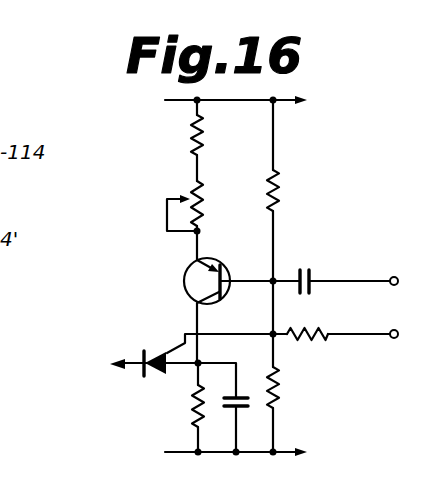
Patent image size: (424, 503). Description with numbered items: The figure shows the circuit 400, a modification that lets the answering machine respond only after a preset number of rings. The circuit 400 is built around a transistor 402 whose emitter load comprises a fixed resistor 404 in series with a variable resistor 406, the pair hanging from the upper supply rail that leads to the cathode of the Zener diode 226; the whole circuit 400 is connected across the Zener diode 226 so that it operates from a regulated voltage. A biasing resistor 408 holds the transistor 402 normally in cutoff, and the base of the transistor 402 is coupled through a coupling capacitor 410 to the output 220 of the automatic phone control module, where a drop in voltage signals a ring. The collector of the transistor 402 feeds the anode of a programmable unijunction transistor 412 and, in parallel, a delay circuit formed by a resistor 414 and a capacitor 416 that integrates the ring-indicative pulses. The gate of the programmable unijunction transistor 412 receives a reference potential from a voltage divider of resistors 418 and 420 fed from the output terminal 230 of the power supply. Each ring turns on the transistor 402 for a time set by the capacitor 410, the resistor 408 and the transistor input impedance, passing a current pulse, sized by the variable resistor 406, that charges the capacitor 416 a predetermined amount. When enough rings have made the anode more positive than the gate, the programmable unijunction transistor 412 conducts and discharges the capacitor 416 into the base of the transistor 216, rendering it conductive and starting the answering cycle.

The circuit 400 is at (141, 248).
The transistor 402 is at (223, 264).
The fixed resistor 404 is at (190, 142).
The variable resistor 406 is at (184, 194).
The biasing resistor 408 is at (278, 183).
The coupling capacitor 410 is at (312, 270).
The programmable unijunction transistor 412 is at (156, 352).
The resistor 414 is at (192, 412).
The capacitor 416 is at (241, 396).
The resistor 418 is at (292, 344).
The resistor 420 is at (279, 387).
The output 220 is at (404, 261).
The output terminal 230 is at (397, 338).
The Zener diode 226 is at (355, 277).
The transistor 216 is at (65, 377).